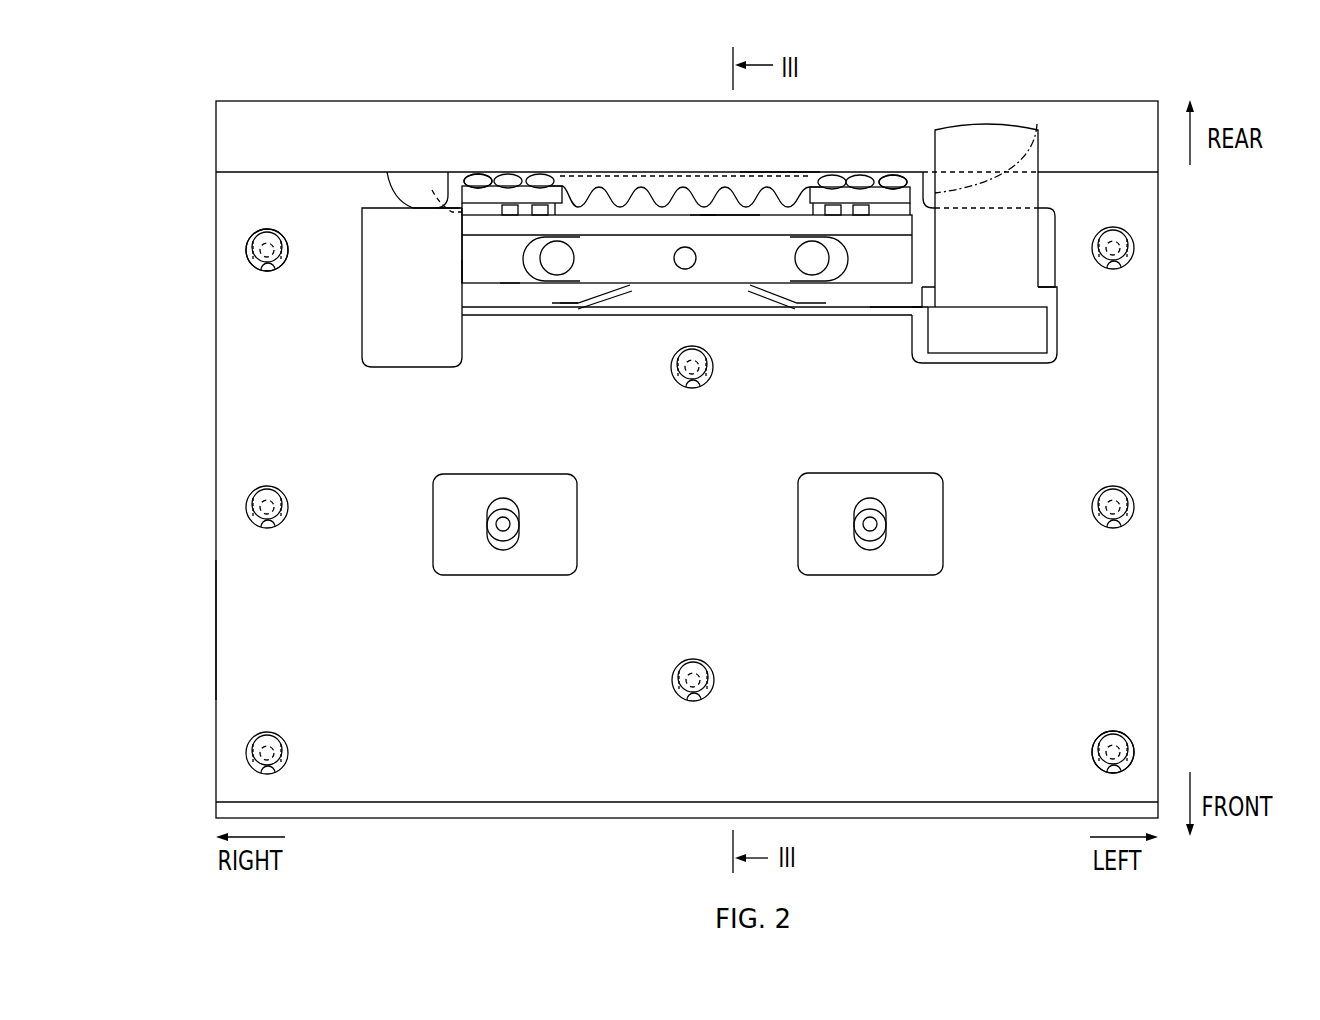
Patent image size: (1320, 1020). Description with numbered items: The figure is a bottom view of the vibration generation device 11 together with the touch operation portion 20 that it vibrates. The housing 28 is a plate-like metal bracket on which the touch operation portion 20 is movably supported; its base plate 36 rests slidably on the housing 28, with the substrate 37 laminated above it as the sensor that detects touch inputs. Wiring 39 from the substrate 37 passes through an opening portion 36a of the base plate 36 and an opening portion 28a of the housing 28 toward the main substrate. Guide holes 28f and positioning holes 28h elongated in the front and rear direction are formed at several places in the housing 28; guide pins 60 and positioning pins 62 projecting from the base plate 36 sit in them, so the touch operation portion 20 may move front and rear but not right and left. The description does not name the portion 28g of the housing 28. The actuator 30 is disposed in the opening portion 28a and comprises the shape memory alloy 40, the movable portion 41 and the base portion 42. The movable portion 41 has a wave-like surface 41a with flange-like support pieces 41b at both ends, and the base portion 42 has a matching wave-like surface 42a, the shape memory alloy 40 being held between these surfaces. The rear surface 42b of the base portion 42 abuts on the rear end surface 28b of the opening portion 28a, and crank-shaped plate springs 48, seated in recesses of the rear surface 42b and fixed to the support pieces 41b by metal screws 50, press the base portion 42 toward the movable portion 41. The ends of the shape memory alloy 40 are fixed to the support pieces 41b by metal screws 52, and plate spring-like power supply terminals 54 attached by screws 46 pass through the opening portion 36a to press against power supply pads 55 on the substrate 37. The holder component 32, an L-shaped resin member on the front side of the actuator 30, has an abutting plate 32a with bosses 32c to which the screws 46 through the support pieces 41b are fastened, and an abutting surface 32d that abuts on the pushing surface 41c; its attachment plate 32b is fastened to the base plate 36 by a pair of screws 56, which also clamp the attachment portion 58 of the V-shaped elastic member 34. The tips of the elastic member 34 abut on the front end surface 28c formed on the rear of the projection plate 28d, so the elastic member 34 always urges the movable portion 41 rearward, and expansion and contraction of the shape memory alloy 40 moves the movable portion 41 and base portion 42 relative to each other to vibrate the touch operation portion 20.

The vibration generation device 11 is at (194, 93).
The touch operation portion 20 is at (240, 430).
The housing 28 is at (1166, 614).
The opening portion 28a is at (887, 297).
The rear end surface 28b is at (795, 172).
The front end surface 28c is at (500, 296).
The projection plate 28d is at (540, 314).
The guide hole 28f is at (277, 272).
The housing right side edge 28g is at (218, 637).
The positioning hole 28h is at (490, 503).
The actuator 30 is at (697, 55).
The holder component 32 is at (452, 262).
The abutting plate 32a is at (472, 229).
The attachment plate 32b is at (472, 273).
The boss 32c is at (387, 172).
The abutting surface 32d is at (733, 212).
The elastic member 34 is at (607, 298).
The base plate 36 is at (1057, 210).
The opening portion 36a is at (1048, 290).
The substrate 37 is at (360, 243).
The wiring 39 is at (987, 290).
The shape memory alloy 40 is at (647, 176).
The movable portion 41 is at (608, 186).
The wave-like surface 41a is at (703, 200).
The support piece 41b is at (500, 212).
The pushing surface 41c is at (705, 218).
The base portion 42 is at (672, 187).
The wave-like surface 42a is at (622, 208).
The rear surface 42b is at (760, 174).
The metal screw 46 is at (478, 175).
The plate spring 48 is at (556, 185).
The metal screw 50 is at (508, 175).
The metal screw 52 is at (540, 175).
The power supply terminal 54 is at (743, 121).
The power supply pad 55 is at (432, 190).
The screw 56 is at (567, 258).
The attachment portion 58 is at (574, 288).
The guide pin 60 is at (240, 250).
The positioning pin 62 is at (507, 540).